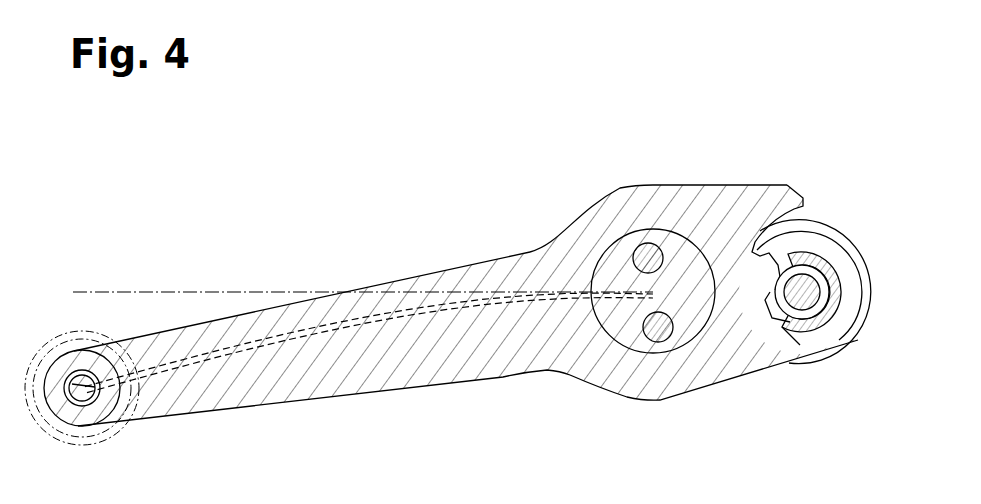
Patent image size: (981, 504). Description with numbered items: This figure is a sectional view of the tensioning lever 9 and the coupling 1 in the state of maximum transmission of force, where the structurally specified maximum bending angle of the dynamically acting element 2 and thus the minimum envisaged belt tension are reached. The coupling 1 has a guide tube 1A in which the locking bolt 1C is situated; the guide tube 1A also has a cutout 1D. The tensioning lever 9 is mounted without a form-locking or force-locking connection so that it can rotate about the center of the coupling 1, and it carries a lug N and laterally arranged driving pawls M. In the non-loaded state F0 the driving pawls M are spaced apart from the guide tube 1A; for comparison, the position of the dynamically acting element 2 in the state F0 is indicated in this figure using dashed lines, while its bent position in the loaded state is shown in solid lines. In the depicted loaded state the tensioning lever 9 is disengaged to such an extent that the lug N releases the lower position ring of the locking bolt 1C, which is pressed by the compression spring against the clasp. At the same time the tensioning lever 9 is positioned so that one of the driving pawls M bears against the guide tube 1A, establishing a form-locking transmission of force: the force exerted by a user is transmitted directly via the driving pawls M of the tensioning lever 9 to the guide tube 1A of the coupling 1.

The coupling 1 is at (623, 248).
The guide tube 1A is at (837, 283).
The locking bolt 1C is at (808, 300).
The cutout 1D is at (780, 315).
The dynamically acting element 2 is at (350, 327).
The tensioning lever 9 is at (487, 272).
The driving pawls M is at (790, 190).
The lug N is at (833, 230).
The non-loaded state F0 is at (113, 292).